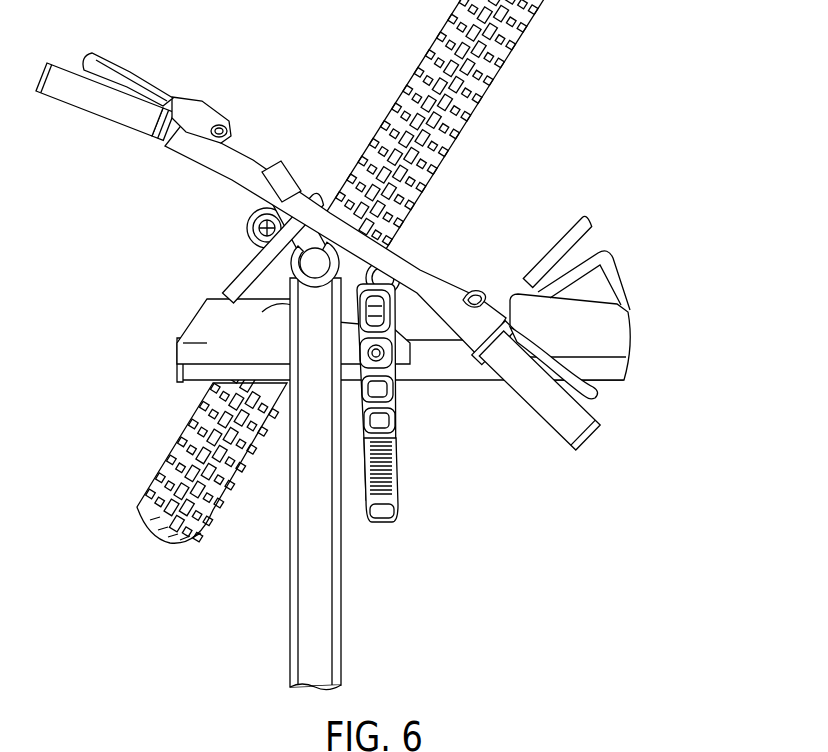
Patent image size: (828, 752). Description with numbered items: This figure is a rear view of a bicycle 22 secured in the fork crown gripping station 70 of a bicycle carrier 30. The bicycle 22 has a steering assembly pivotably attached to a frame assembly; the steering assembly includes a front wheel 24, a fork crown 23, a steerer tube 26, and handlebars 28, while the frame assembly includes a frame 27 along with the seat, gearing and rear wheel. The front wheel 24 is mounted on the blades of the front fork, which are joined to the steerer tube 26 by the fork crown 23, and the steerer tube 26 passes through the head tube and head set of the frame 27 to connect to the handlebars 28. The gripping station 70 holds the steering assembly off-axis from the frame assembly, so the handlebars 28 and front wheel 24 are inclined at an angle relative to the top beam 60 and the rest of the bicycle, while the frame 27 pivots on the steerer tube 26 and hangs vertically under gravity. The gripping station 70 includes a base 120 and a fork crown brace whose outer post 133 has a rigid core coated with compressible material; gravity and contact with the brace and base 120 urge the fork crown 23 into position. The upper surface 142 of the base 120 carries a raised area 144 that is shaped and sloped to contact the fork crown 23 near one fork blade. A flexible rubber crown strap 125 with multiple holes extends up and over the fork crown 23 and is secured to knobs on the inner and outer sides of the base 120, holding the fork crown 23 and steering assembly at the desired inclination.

The bicycle 22 is at (193, 93).
The fork crown 23 is at (309, 227).
The front wheel 24 is at (419, 82).
The steerer tube 26 is at (310, 261).
The frame 27 is at (320, 613).
The handlebars 28 is at (77, 100).
The bicycle carrier 30 is at (598, 128).
The top beam 60 is at (180, 375).
The fork crown gripping station 70 is at (650, 275).
The base 120 is at (207, 335).
The crown strap 125 is at (397, 497).
The outer post 133 is at (250, 268).
The upper surface 142 is at (277, 307).
The raised area 144 is at (397, 327).